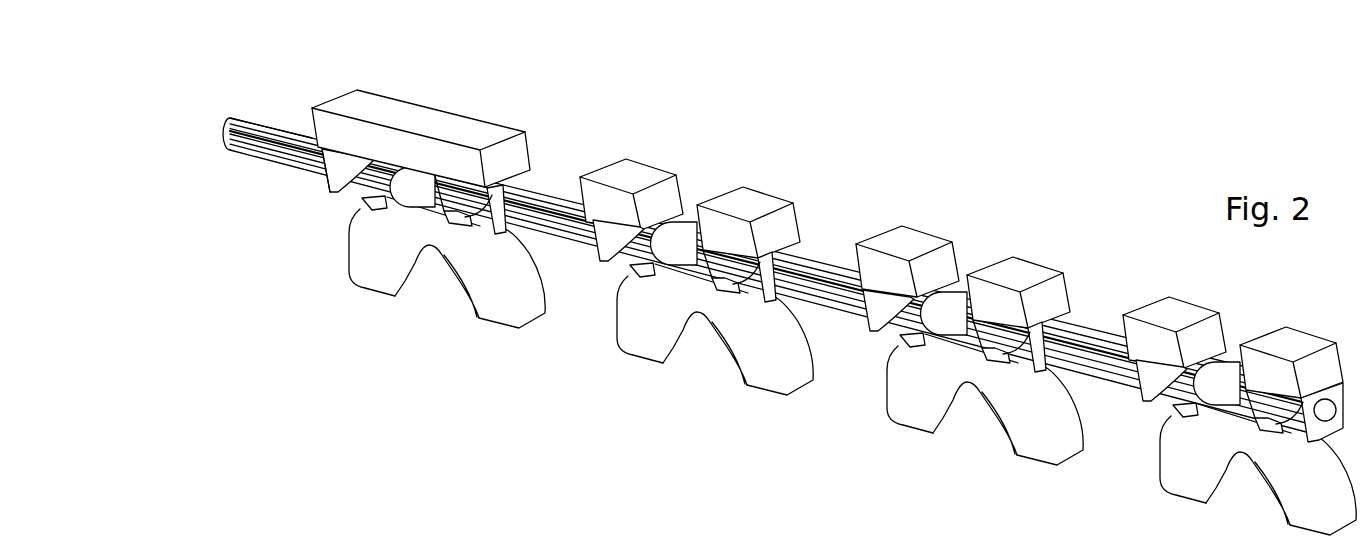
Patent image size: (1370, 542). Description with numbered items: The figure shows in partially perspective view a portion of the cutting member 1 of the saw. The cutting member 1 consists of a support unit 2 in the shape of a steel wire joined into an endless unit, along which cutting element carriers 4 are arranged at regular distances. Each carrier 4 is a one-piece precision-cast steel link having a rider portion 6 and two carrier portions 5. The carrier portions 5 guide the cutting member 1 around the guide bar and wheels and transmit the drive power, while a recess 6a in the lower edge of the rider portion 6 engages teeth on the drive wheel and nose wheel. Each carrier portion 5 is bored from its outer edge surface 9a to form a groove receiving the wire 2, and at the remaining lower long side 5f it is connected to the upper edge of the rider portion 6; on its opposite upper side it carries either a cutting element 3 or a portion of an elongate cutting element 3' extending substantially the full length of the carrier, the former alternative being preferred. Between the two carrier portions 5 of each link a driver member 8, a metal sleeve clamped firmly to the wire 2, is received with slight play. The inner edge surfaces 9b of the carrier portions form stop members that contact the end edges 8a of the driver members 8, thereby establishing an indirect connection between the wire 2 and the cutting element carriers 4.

The cutting member 1 is at (561, 188).
The support unit 2 is at (243, 145).
The cutting element 3 is at (1018, 256).
The elongate cutting element 3' is at (421, 120).
The cutting element carrier 4 is at (309, 180).
The carrier portion 5 is at (335, 168).
The lower long side 5f is at (455, 212).
The rider portion 6 is at (749, 343).
The recess 6a is at (703, 343).
The driver member 8 is at (935, 316).
The end edge 8a is at (985, 340).
The outer edge surface 9a is at (795, 248).
The inner edge surface 9b is at (688, 222).